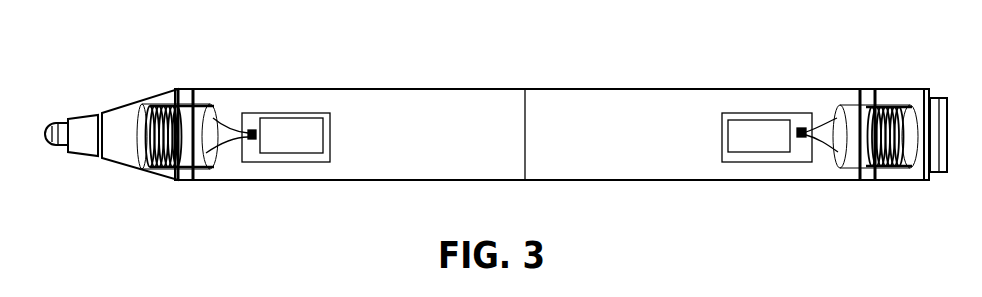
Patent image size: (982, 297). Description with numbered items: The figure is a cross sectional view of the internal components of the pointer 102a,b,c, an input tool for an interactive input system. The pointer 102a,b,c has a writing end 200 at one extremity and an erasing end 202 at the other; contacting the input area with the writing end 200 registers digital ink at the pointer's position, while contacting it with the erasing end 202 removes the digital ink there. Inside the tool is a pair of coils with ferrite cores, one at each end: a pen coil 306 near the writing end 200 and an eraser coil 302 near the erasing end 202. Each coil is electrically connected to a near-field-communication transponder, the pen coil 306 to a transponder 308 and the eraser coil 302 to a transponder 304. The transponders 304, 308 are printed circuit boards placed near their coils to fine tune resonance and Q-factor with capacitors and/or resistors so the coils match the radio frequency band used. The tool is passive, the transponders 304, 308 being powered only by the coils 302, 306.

The pointer 102a,b,c is at (483, 89).
The writing end 200 is at (102, 112).
The erasing end 202 is at (936, 96).
The eraser coil 302 is at (868, 100).
The near-field-communication transponder 304 is at (760, 117).
The pen coil 306 is at (190, 100).
The near-field-communication transponder 308 is at (322, 110).